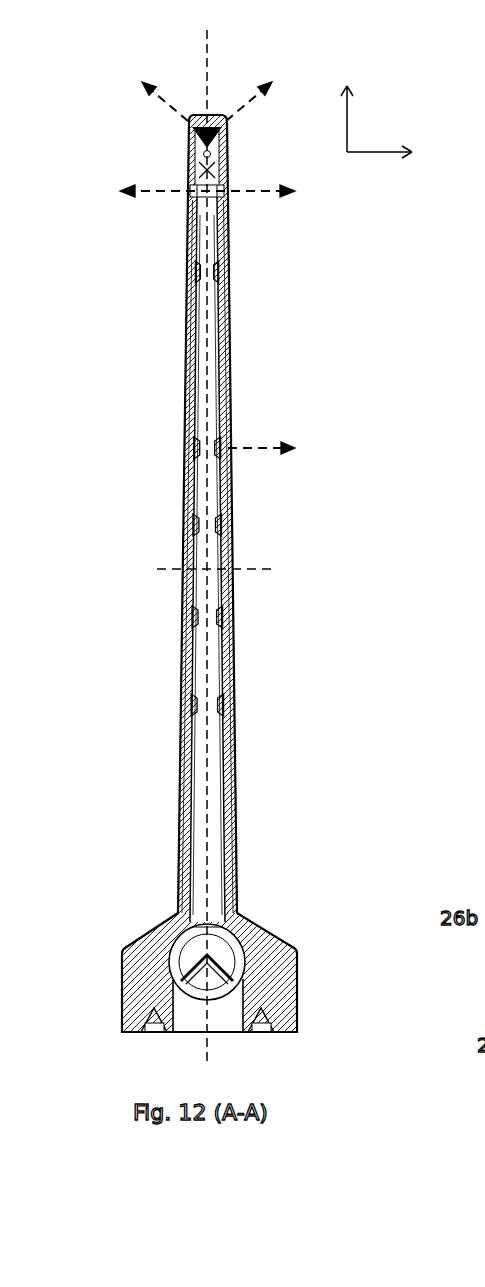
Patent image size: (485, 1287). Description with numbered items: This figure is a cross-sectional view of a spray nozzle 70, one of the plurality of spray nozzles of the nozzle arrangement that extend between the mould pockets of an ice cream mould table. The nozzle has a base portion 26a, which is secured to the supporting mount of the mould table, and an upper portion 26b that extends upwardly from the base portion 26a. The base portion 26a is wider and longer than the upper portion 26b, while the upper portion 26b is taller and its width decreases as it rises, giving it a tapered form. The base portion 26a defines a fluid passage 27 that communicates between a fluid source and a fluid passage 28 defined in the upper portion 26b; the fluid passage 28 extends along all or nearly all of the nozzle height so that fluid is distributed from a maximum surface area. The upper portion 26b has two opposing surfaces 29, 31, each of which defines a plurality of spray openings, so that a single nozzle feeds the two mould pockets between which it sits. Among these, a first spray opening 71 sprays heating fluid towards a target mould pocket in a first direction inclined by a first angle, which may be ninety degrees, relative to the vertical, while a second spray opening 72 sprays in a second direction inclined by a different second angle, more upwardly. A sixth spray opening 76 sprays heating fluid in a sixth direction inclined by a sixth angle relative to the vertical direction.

The spray nozzle 70 is at (102, 263).
The second spray opening 72 is at (225, 137).
The first spray opening 71 is at (225, 183).
The opposing surface 29 is at (187, 323).
The sixth spray opening 76 is at (225, 445).
The upper portion 26b is at (185, 490).
The opposing surface 31 is at (232, 535).
The fluid passage 28 is at (203, 592).
The base portion 26a is at (268, 968).
The fluid passage 27 is at (212, 1012).